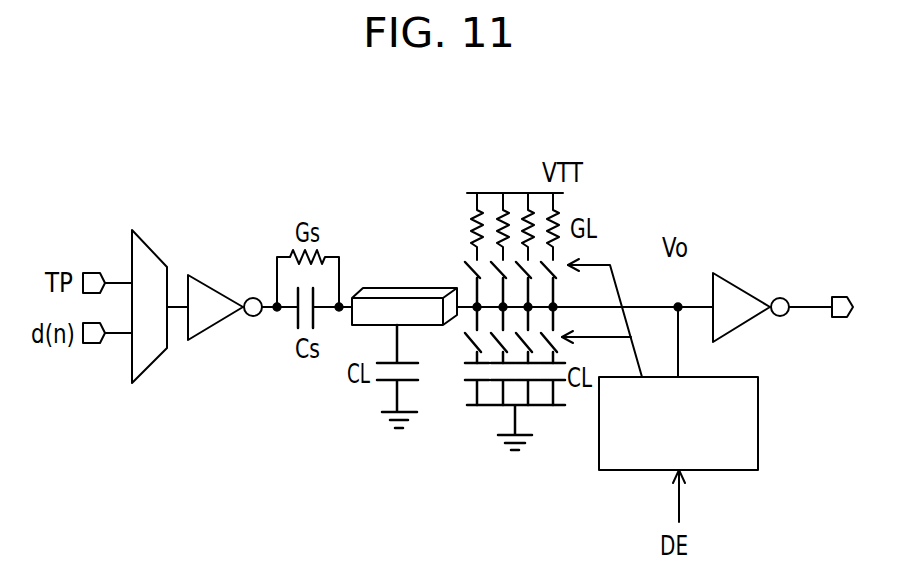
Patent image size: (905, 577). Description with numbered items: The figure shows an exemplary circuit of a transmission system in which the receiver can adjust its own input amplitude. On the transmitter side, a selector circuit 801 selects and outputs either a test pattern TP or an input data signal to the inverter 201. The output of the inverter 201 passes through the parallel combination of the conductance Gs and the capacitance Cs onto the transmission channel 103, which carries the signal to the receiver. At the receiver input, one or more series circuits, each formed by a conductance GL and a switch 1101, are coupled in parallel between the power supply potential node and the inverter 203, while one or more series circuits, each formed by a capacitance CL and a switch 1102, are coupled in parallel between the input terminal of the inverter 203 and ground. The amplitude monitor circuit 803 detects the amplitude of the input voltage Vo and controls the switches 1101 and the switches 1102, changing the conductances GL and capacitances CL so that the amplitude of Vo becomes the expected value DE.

The selector circuit 801 is at (157, 360).
The inverter 201 is at (216, 284).
The transmission channel 103 is at (380, 289).
The switch 1101 is at (466, 263).
The switch 1102 is at (467, 333).
The inverter 203 is at (742, 285).
The amplitude monitor circuit 803 is at (758, 420).